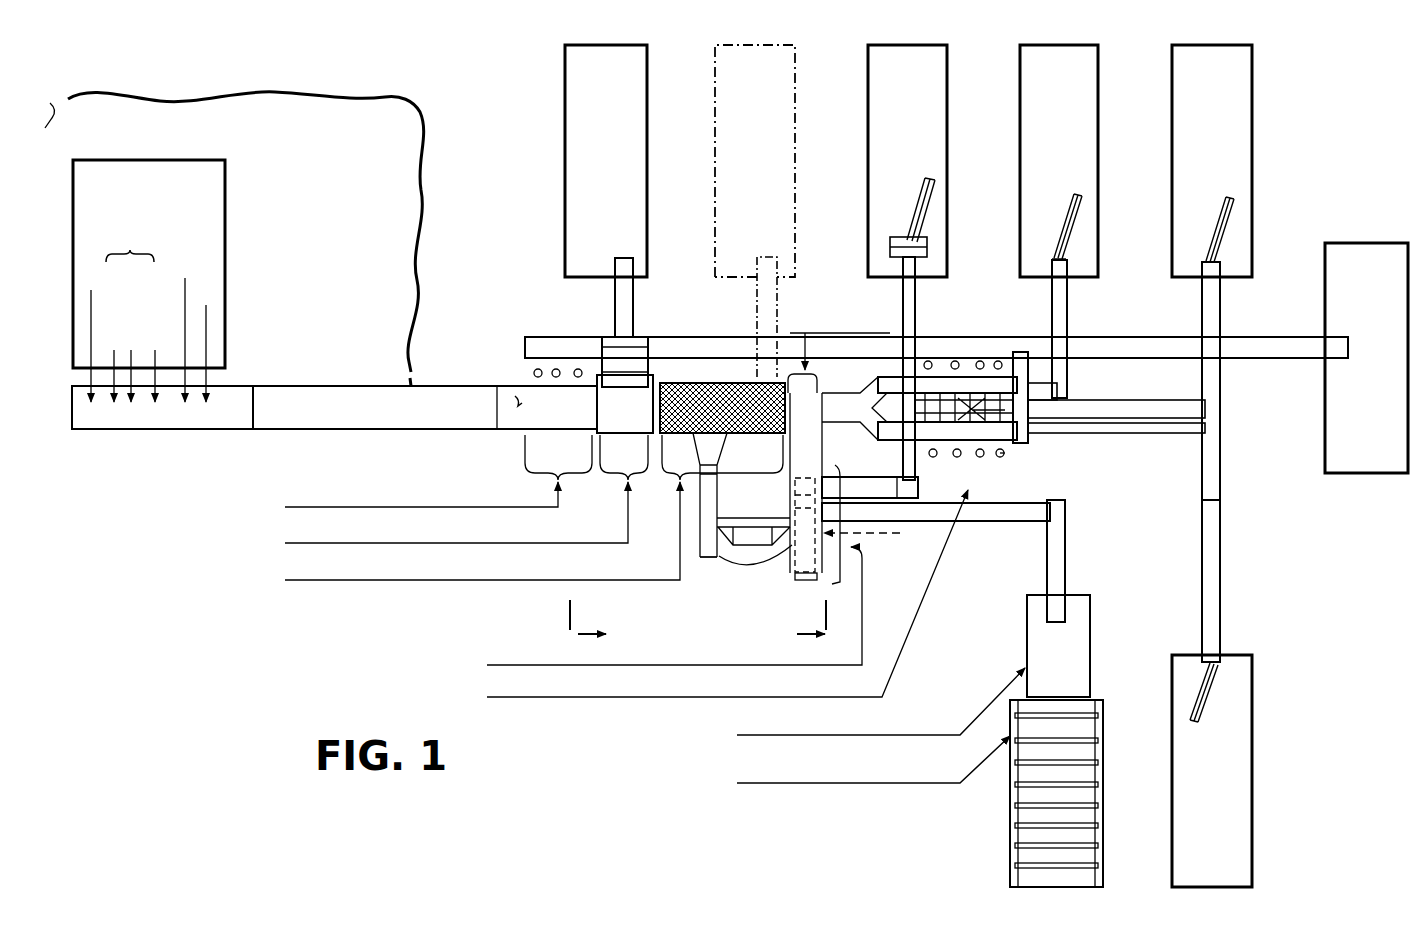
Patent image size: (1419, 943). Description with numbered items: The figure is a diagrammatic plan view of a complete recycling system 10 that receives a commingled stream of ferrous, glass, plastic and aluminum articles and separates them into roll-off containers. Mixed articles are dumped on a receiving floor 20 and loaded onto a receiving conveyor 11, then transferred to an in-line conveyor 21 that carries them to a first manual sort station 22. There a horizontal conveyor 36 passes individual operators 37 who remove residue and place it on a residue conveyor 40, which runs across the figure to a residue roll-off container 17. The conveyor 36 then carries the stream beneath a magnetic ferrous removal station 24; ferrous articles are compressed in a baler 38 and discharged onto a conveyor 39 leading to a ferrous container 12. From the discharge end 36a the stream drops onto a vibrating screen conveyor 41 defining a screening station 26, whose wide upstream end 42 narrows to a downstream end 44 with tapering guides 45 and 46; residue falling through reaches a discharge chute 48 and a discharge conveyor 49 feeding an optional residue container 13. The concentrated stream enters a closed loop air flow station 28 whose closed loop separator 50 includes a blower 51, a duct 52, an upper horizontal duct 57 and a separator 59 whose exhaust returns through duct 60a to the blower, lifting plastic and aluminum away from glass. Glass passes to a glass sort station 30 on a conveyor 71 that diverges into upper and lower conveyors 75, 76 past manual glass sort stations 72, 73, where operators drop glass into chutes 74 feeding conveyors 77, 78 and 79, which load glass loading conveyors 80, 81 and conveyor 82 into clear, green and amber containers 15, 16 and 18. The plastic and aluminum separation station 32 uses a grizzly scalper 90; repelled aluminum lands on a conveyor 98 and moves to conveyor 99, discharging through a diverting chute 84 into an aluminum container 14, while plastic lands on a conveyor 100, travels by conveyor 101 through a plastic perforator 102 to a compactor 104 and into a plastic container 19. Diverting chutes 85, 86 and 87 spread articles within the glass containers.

The system 10 is at (370, 665).
The receiving conveyor 11 is at (162, 432).
The ferrous roll-off container 12 is at (565, 88).
The optional residue roll-off container 13 is at (715, 90).
The aluminum roll-off container 14 is at (868, 90).
The clear glass roll-off container 15 is at (1020, 96).
The green glass roll-off container 16 is at (1172, 96).
The residue roll-off container 17 is at (1325, 292).
The amber glass roll-off container 18 is at (1252, 706).
The plastic roll-off container 19 is at (1105, 780).
The receiving floor 20 is at (348, 157).
The in-line conveyor 21 is at (318, 431).
The first manual sort station 22 is at (438, 471).
The ferrous removal station 24 is at (466, 490).
The screening station 26 is at (534, 509).
The closed loop air flow station 28 is at (838, 316).
The glass sort station 30 is at (727, 593).
The plastic and aluminum separation station 32 is at (674, 606).
The conveyor 36 is at (513, 395).
The discharge end 36a is at (625, 404).
The individual operators 37 is at (556, 368).
The baler 38 is at (628, 342).
The conveyor 39 is at (628, 290).
The residue conveyor 40 is at (525, 345).
The vibrating screen conveyor 41 is at (707, 376).
The upstream end 42 is at (664, 370).
The downstream end 44 is at (823, 415).
The tapering guide 45 is at (778, 437).
The tapering guide 46 is at (820, 386).
The discharge chute 48 is at (785, 380).
The discharge conveyor 49 is at (777, 255).
The closed loop separator 50 is at (746, 580).
The blower 51 is at (706, 560).
The duct 52 is at (700, 497).
The upper horizontal duct 57 is at (788, 487).
The separator 59 is at (787, 578).
The duct 60a is at (752, 534).
The conveyor 71 is at (848, 402).
The manual glass sort station 72 is at (1010, 455).
The manual glass sort station 73 is at (960, 372).
The chute 74 is at (988, 462).
The upper conveyor 75 is at (936, 383).
The lower conveyor 76 is at (945, 462).
The conveyor 77 is at (1060, 393).
The conveyor 78 is at (1140, 405).
The conveyor 79 is at (1142, 433).
The glass loading conveyor 80 is at (1067, 330).
The glass load conveyor 81 is at (1220, 330).
The conveyor 82 is at (1220, 524).
The diverting chute 84 is at (930, 212).
The diverting chute 85 is at (1078, 228).
The diverting chute 86 is at (1232, 230).
The diverting chute 87 is at (1190, 702).
The grizzly scalper 90 is at (864, 545).
The conveyor 98 is at (878, 524).
The conveyor 99 is at (915, 298).
The conveyor 100 is at (995, 512).
The conveyor 101 is at (1065, 555).
The plastic perforator 102 is at (1065, 665).
The compactor or baler 104 is at (920, 777).